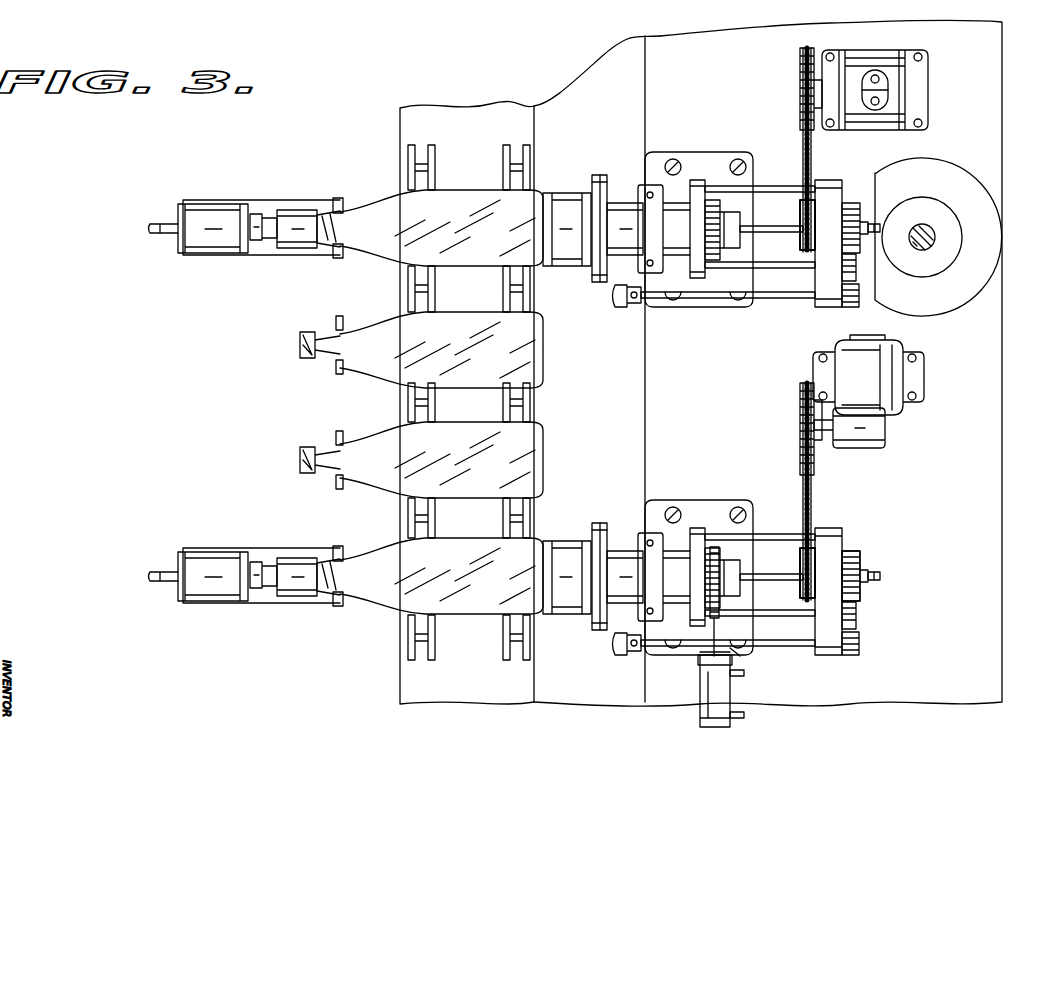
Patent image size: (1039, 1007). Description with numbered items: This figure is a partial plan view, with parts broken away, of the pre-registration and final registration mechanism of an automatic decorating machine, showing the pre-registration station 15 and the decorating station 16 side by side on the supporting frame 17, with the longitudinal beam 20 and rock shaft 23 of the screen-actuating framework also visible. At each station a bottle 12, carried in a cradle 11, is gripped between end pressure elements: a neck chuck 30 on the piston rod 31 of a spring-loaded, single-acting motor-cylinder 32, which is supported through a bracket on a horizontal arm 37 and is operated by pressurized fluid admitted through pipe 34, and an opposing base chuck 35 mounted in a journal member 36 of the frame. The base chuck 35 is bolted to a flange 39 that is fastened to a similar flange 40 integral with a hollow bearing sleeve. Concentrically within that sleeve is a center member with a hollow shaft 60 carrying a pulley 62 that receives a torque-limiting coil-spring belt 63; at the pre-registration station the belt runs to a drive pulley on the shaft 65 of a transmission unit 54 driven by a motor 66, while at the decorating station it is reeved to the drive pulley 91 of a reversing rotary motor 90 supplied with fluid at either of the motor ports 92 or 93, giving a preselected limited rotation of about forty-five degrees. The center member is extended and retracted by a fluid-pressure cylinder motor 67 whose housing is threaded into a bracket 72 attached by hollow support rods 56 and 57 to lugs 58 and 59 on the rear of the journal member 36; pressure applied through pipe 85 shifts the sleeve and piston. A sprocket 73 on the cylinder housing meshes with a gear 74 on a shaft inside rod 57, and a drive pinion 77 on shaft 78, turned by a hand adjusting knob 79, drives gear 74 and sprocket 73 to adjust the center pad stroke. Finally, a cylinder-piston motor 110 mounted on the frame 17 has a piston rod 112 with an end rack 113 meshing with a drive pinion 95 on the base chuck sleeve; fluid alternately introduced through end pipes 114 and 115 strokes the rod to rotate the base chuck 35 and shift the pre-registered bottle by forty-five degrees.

The cradle 11 is at (335, 258).
The bottle 12 is at (410, 258).
The pre-registration station 15 is at (355, 656).
The decorating station 16 is at (345, 281).
The supporting frame 17 is at (698, 412).
The longitudinal beam 20 is at (410, 160).
The rock shaft 23 is at (935, 237).
The neck chuck 30 is at (305, 212).
The piston rod 31 is at (270, 216).
The motor-cylinder 32 is at (200, 214).
The pipe 34 is at (162, 226).
The base chuck 35 is at (565, 200).
The journal member 36 is at (625, 205).
The horizontal arm 37 is at (372, 181).
The flange 39 is at (596, 279).
The flange 40 is at (602, 284).
The transmission unit 54 is at (886, 436).
The hollow support rod 56 is at (799, 164).
The hollow support rod 57 is at (767, 270).
The lug 58 is at (700, 182).
The lug 59 is at (697, 282).
The hollow shaft 60 is at (791, 212).
The pulley 62 is at (802, 243).
The coil-spring belt 63 is at (802, 137).
The shaft 65 is at (825, 442).
The motor 66 is at (890, 384).
The cylinder motor 67 is at (872, 562).
The bracket 72 is at (835, 200).
The sprocket 73 is at (855, 210).
The gear 74 is at (855, 270).
The drive pinion 77 is at (848, 304).
The shaft 78 is at (788, 300).
The hand adjusting knob 79 is at (628, 309).
The pipe 85 is at (873, 226).
The reversing rotary motor 90 is at (897, 118).
The drive pulley 91 is at (800, 92).
The motor port 92 is at (876, 106).
The motor port 93 is at (876, 74).
The drive pinion 95 is at (712, 262).
The cylinder-piston motor 110 is at (705, 702).
The piston rod 112 is at (734, 654).
The end rack 113 is at (722, 562).
The end pipe 114 is at (744, 719).
The end pipe 115 is at (744, 676).